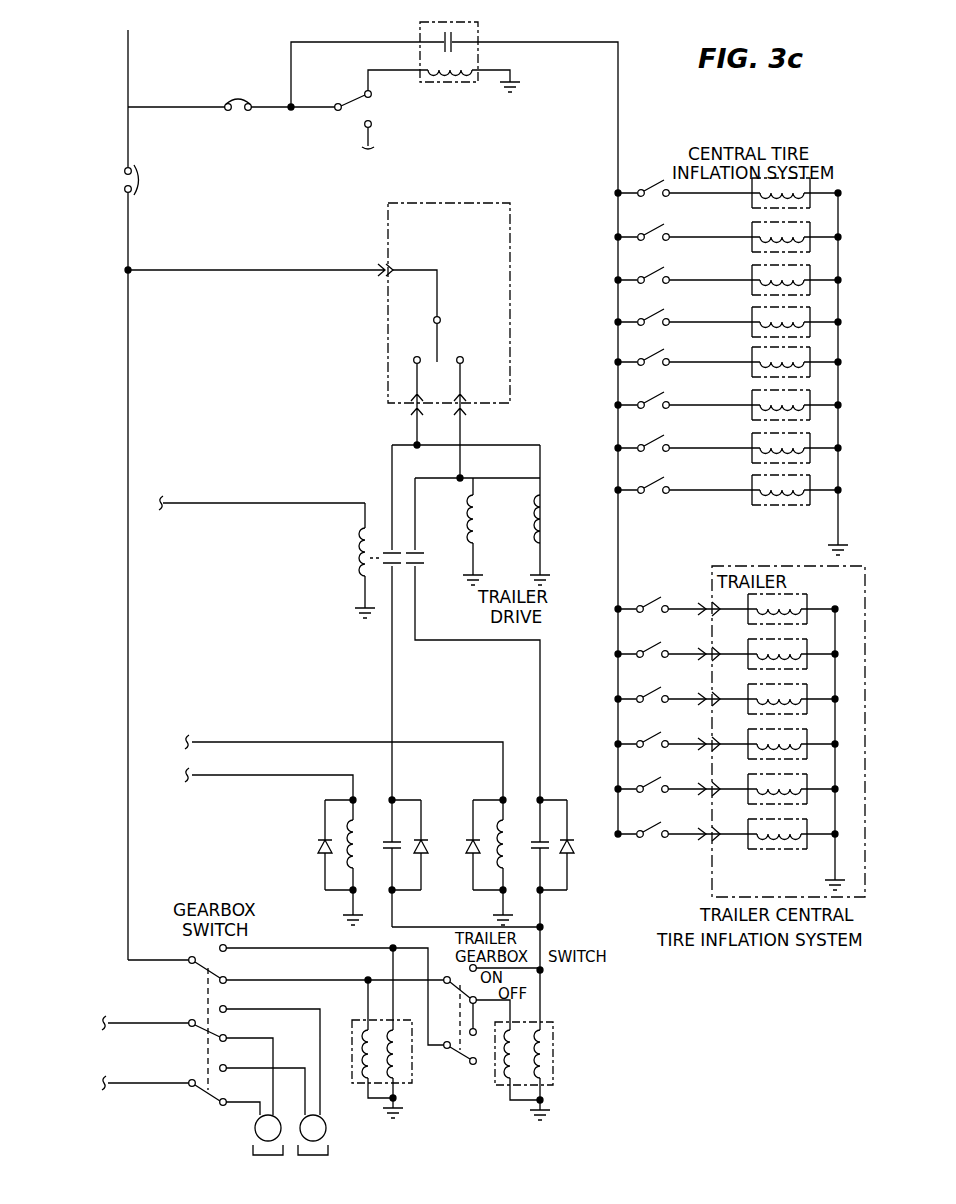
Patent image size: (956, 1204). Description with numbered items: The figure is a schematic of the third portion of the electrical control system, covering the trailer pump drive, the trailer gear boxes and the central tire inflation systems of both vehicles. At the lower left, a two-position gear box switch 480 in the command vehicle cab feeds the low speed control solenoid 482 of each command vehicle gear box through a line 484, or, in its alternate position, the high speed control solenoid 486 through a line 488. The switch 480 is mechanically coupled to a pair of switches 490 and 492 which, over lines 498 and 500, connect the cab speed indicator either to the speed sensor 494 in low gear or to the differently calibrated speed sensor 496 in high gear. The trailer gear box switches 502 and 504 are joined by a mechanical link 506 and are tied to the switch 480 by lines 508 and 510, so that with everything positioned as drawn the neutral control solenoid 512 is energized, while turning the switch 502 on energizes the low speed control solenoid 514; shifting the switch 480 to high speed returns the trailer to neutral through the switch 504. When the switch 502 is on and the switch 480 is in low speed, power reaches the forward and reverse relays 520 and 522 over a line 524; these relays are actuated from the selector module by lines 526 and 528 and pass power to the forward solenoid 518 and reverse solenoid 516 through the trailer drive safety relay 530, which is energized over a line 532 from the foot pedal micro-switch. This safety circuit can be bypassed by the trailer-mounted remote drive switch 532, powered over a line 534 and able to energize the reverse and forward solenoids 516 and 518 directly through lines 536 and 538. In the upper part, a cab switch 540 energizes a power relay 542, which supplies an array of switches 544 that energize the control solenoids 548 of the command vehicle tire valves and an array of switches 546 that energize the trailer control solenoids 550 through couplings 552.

The gear box switch 480 is at (205, 969).
The low range relay coil 482 is at (372, 1084).
The line 484 is at (309, 990).
The high speed control solenoid 486 is at (401, 1082).
The line 488 is at (368, 1025).
The switch 490 is at (205, 1028).
The switch 492 is at (207, 1094).
The speed sensor 494 is at (260, 1123).
The speed sensor 496 is at (329, 1137).
The line 498 is at (132, 1021).
The line 500 is at (132, 1082).
The trailer gear box switch 502 is at (458, 978).
The trailer gear box switch 504 is at (458, 1055).
The mechanical link 506 is at (458, 1023).
The line 508 is at (394, 982).
The line 510 is at (444, 1059).
The neutral control solenoid 512 is at (505, 1086).
The speed control solenoid 514 is at (543, 1057).
The reverse solenoid 516 is at (466, 530).
The forward solenoid 518 is at (529, 504).
The forward relay 520 is at (404, 786).
The reverse relay 522 is at (486, 800).
The line 524 is at (467, 928).
The line 526 is at (282, 775).
The line 528 is at (282, 742).
The trailer drive safety relay 530 is at (386, 542).
The remote drive switch 532 is at (508, 288).
The line 534 is at (230, 270).
The line 536 is at (470, 438).
The line 538 is at (414, 444).
The switch 540 is at (375, 105).
The power relay 542 is at (480, 36).
The switches 544 is at (662, 229).
The switches 546 is at (650, 648).
The control solenoid 548 is at (810, 190).
The control solenoid 550 is at (742, 868).
The couplings 552 is at (706, 655).